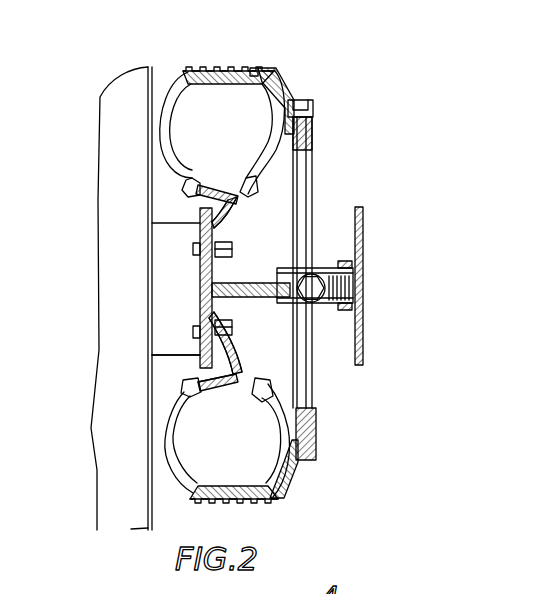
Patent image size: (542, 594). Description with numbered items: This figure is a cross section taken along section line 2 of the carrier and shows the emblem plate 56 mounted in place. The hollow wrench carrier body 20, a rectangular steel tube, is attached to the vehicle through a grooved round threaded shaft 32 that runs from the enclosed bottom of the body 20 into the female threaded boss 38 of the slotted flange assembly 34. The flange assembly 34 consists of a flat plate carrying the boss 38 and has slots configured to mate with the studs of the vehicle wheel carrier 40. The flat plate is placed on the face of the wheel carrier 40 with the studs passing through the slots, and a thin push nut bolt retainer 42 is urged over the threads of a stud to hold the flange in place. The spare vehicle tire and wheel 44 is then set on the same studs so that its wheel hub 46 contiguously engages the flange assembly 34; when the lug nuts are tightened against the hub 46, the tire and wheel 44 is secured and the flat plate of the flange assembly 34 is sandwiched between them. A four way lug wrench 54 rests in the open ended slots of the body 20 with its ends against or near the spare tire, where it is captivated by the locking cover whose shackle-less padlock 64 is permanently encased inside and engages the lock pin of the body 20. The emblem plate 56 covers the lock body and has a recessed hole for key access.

The section line 2 is at (0, 41).
The hollow wrench carrier body 20 is at (320, 268).
The grooved round threaded shaft 32 is at (257, 298).
The slotted flange assembly 34 is at (196, 362).
The female threaded boss 38 is at (225, 277).
The vehicle wheel carrier 40 is at (158, 218).
The push nut bolt retainer 42 is at (212, 226).
The spare vehicle tire and wheel 44 is at (253, 72).
The wheel hub 46 is at (200, 380).
The four way lug wrench 54 is at (296, 152).
The emblem plate 56 is at (352, 266).
The shackle-less padlock 64 is at (355, 300).